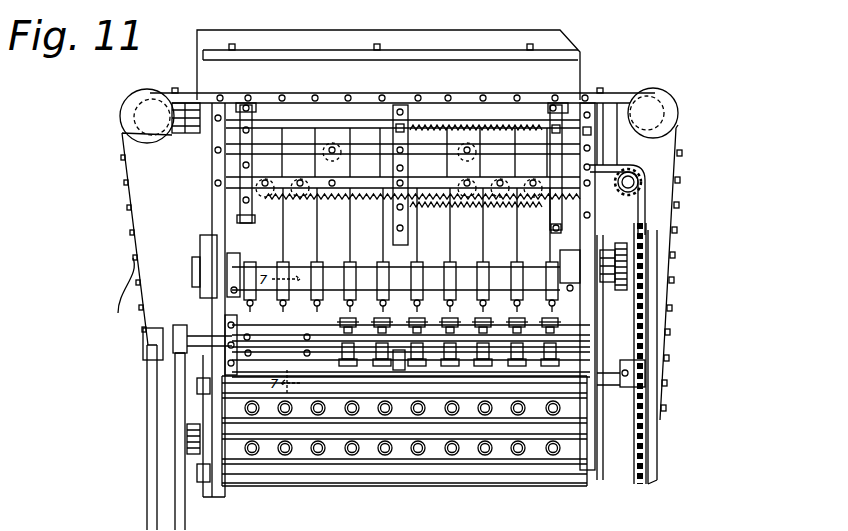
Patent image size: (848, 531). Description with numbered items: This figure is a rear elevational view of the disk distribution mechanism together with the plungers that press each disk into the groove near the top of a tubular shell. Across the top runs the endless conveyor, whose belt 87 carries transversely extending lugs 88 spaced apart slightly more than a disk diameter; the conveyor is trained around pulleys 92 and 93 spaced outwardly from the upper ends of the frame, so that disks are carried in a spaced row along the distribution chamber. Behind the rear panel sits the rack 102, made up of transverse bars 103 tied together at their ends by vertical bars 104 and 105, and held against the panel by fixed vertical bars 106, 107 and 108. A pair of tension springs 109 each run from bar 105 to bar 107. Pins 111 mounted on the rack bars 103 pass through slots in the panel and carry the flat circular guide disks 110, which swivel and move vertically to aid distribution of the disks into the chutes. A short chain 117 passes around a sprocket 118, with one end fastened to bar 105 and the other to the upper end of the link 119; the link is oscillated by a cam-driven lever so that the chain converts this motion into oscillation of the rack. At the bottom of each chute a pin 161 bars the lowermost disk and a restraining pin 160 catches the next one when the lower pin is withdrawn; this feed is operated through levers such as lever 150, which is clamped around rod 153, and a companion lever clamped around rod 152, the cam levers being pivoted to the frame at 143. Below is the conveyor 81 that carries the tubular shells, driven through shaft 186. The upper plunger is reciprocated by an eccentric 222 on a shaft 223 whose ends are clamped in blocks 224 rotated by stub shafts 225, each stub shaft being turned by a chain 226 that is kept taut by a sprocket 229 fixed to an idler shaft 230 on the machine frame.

The pulley 93 is at (125, 110).
The pulley 92 is at (680, 100).
The fixed vertical bar 106 is at (250, 112).
The transverse bar 103 is at (350, 180).
The pin 111 is at (358, 185).
The flat circular disk 110 is at (350, 206).
The tension spring 109 is at (478, 210).
The fixed vertical bar 107 is at (405, 112).
The fixed vertical bar 108 is at (560, 118).
The vertical bar 104 is at (215, 178).
The rack 102 is at (208, 212).
The belt 87 is at (133, 258).
The lug 88 is at (145, 335).
The pivot 143 is at (143, 338).
The rod 153 is at (200, 338).
The lever 150 is at (160, 346).
The rod 152 is at (168, 365).
The shaft 186 is at (176, 432).
The block 224 is at (552, 266).
The shaft 223 is at (250, 268).
The eccentric 222 is at (343, 265).
The restraining pin 160 is at (249, 337).
The pin 161 is at (252, 352).
The conveyor 81 is at (505, 452).
The vertical bar 105 is at (618, 144).
The sprocket 118 is at (655, 178).
The short chain 117 is at (647, 207).
The chain 226 is at (633, 305).
The link 119 is at (650, 330).
The sprocket 229 is at (647, 375).
The stub shaft 225 is at (609, 250).
The idler shaft 230 is at (610, 372).